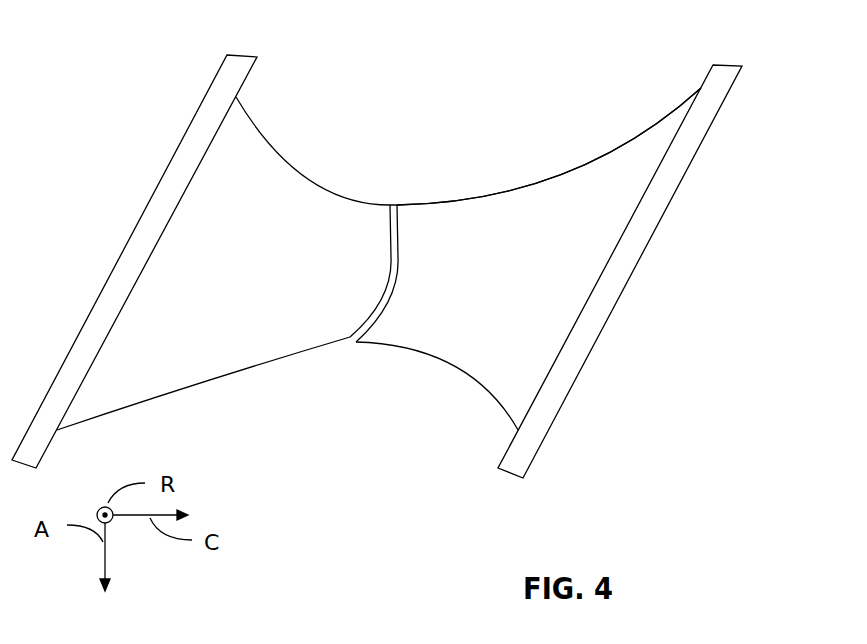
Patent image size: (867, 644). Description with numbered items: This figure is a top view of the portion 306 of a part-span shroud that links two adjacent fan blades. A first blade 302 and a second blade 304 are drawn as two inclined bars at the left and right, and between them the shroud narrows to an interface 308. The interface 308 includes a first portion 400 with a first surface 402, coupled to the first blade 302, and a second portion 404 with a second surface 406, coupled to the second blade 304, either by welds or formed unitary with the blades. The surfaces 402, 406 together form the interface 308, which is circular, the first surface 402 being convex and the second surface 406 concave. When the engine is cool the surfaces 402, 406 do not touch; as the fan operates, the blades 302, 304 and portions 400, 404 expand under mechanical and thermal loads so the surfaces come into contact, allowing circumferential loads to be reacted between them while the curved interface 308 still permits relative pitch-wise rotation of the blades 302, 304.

The first blade 302 is at (186, 133).
The second blade 304 is at (735, 63).
The portion of the part-span shroud 306 is at (650, 115).
The interface 308 is at (350, 342).
The first portion 400 is at (251, 118).
The first surface 402 is at (390, 257).
The second portion 404 is at (597, 143).
The second surface 406 is at (398, 252).